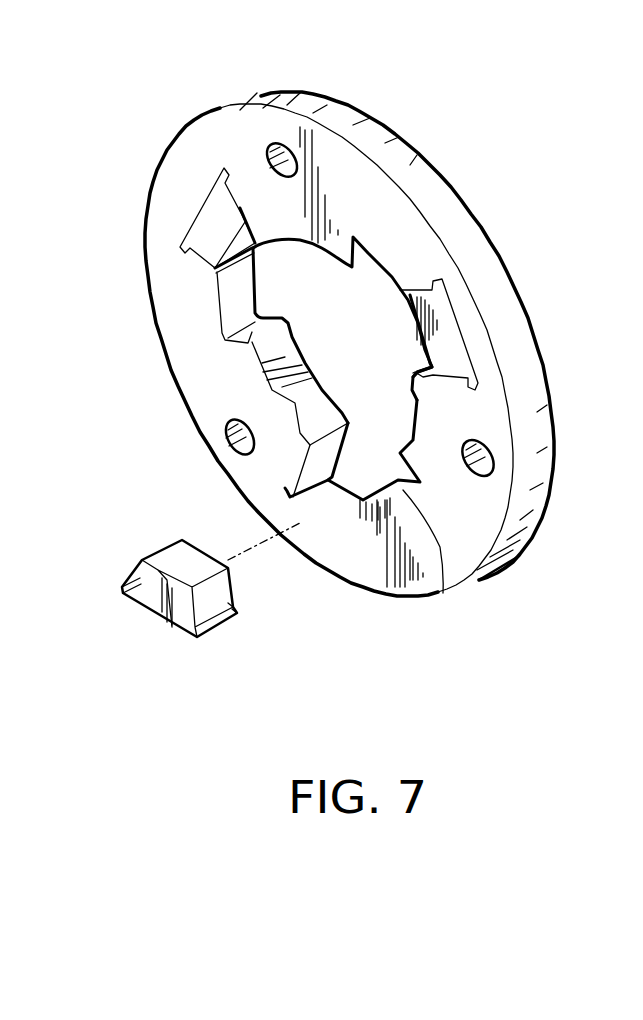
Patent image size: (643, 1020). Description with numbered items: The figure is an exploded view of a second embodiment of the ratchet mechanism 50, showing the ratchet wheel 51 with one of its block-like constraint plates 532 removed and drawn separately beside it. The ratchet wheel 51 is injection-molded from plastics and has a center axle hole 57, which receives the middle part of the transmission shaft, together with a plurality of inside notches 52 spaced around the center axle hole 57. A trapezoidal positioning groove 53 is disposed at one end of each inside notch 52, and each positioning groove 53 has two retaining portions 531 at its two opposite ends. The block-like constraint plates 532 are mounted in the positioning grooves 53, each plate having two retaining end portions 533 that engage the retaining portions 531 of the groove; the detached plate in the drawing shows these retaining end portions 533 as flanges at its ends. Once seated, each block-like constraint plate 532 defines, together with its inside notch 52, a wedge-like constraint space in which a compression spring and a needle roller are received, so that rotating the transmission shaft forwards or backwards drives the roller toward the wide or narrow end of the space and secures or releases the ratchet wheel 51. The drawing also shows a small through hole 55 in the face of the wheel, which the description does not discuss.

The ratchet mechanism 50 is at (384, 110).
The ratchet wheel 51 is at (492, 35).
The inside notches 52 is at (393, 272).
The block-like constraint plates 532 is at (208, 230).
The center axle hole 57 is at (253, 398).
The through hole 55 is at (493, 462).
The trapezoidal positioning grooves 53 is at (340, 517).
The retaining portions 531 is at (377, 533).
The retaining end portions 533 is at (122, 587).